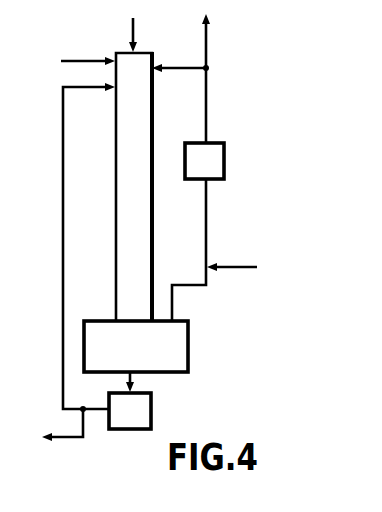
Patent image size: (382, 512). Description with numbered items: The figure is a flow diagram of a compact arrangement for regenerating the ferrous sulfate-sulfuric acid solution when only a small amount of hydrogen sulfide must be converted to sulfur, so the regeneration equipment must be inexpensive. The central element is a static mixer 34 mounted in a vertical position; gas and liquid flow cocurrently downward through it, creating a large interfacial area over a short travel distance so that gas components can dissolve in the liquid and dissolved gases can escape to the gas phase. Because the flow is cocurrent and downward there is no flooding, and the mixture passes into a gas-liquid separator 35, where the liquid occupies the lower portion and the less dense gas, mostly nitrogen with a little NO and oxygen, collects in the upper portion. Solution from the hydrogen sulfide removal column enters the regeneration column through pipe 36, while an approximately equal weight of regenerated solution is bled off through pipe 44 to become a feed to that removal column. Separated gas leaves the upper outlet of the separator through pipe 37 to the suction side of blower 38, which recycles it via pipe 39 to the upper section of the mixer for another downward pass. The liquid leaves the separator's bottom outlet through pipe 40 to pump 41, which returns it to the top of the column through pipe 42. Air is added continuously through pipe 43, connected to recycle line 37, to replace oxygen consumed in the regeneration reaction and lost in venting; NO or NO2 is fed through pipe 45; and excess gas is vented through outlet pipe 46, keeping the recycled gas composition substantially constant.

The static mixer 34 is at (145, 205).
The gas-liquid separator 35 is at (145, 358).
The pipe 36 is at (62, 61).
The pipe 37 is at (238, 224).
The blower 38 is at (216, 174).
The pipe 39 is at (193, 69).
The pipe 40 is at (133, 380).
The pump 41 is at (142, 425).
The pipe 42 is at (96, 224).
The pipe 43 is at (255, 268).
The pipe 44 is at (77, 439).
The pipe 45 is at (166, 31).
The outlet pipe 46 is at (247, 38).